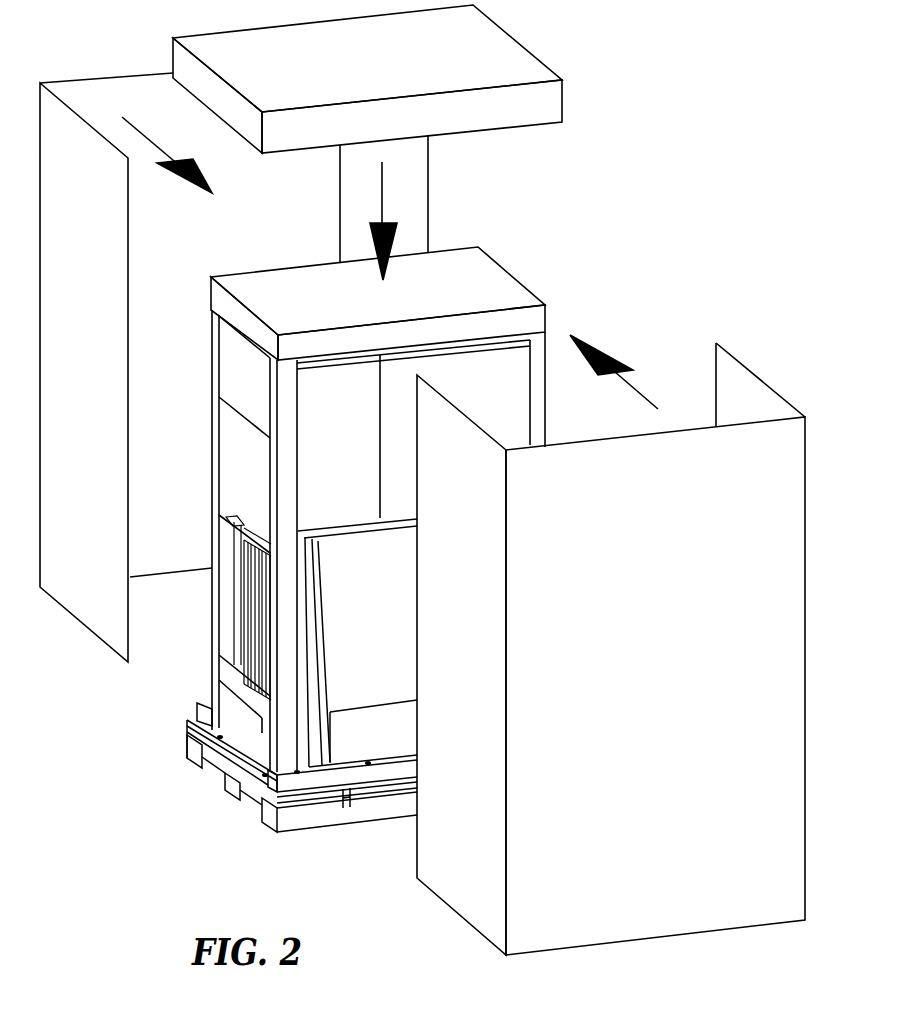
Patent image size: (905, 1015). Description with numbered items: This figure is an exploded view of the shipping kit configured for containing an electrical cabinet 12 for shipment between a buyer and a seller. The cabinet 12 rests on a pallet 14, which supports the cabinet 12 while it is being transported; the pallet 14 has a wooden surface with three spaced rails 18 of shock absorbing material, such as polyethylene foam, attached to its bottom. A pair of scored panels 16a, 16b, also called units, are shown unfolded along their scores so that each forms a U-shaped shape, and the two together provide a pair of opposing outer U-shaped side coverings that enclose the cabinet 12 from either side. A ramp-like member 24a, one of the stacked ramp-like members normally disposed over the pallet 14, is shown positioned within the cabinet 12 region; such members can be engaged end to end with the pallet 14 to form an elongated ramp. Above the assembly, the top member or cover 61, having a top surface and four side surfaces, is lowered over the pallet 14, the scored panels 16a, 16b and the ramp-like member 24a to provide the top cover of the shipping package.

The top member or cover 61 is at (376, 67).
The electrical cabinet 12 is at (482, 295).
The scored panel 16a is at (58, 374).
The scored panel 16b is at (627, 670).
The ramp-like member 24a is at (352, 648).
The pallet 14 is at (370, 807).
The rails 18 is at (268, 813).